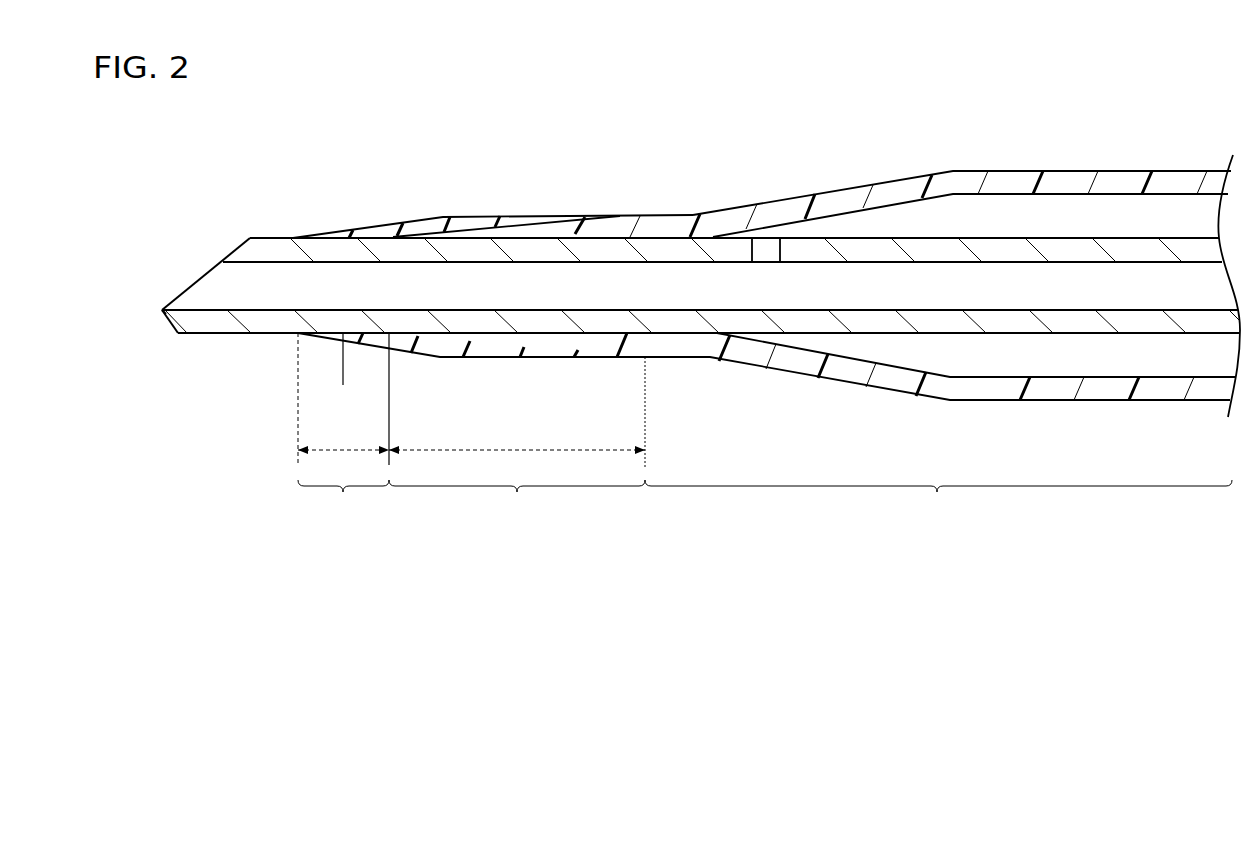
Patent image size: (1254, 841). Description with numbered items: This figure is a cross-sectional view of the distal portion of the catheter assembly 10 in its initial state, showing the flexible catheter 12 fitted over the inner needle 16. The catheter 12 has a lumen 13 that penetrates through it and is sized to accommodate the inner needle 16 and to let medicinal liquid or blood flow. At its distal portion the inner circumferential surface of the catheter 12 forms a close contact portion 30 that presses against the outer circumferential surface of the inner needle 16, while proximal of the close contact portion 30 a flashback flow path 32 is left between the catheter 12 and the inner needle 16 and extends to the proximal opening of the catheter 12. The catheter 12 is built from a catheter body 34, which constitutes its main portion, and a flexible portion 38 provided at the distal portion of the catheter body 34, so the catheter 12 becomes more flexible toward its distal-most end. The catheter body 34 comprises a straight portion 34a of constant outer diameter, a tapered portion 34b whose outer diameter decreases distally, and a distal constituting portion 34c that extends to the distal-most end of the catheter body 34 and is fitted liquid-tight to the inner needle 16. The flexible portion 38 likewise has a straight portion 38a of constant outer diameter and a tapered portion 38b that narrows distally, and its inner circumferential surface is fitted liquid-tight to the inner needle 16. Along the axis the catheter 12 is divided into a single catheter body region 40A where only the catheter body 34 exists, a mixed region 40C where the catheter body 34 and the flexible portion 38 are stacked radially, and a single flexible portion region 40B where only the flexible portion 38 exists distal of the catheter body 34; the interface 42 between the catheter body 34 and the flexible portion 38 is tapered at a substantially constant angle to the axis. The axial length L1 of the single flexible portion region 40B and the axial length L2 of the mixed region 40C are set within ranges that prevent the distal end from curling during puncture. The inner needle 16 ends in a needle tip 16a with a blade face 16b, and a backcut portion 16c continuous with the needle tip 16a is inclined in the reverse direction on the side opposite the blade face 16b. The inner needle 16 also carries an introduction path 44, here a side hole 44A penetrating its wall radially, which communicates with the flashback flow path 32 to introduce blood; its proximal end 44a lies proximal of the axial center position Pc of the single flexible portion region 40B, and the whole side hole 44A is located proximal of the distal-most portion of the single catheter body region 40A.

The catheter assembly 10 is at (601, 148).
The catheter 12 is at (1178, 165).
The lumen 13 is at (1105, 357).
The inner needle 16 is at (898, 341).
The needle tip 16a is at (160, 310).
The blade face 16b is at (247, 239).
The backcut portion 16c is at (170, 323).
The close contact portion 30 is at (537, 242).
The flashback flow path 32 is at (1055, 212).
The catheter body 34 is at (972, 166).
The straight portion 34a is at (1110, 183).
The tapered portion 34b is at (845, 203).
The distal constituting portion 34c is at (658, 226).
The flexible portion 38 is at (440, 209).
The straight portion 38a is at (483, 222).
The tapered portion 38b is at (373, 232).
The single catheter body region 40A is at (938, 502).
The single flexible portion region 40B is at (343, 502).
The mixed region 40C is at (517, 502).
The interface 42 is at (512, 225).
The introduction path 44 is at (768, 247).
The side hole 44A is at (765, 193).
The proximal end 44a is at (768, 254).
The axial center position Pc is at (343, 370).
The axial length L1 is at (343, 399).
The axial length L2 is at (517, 412).